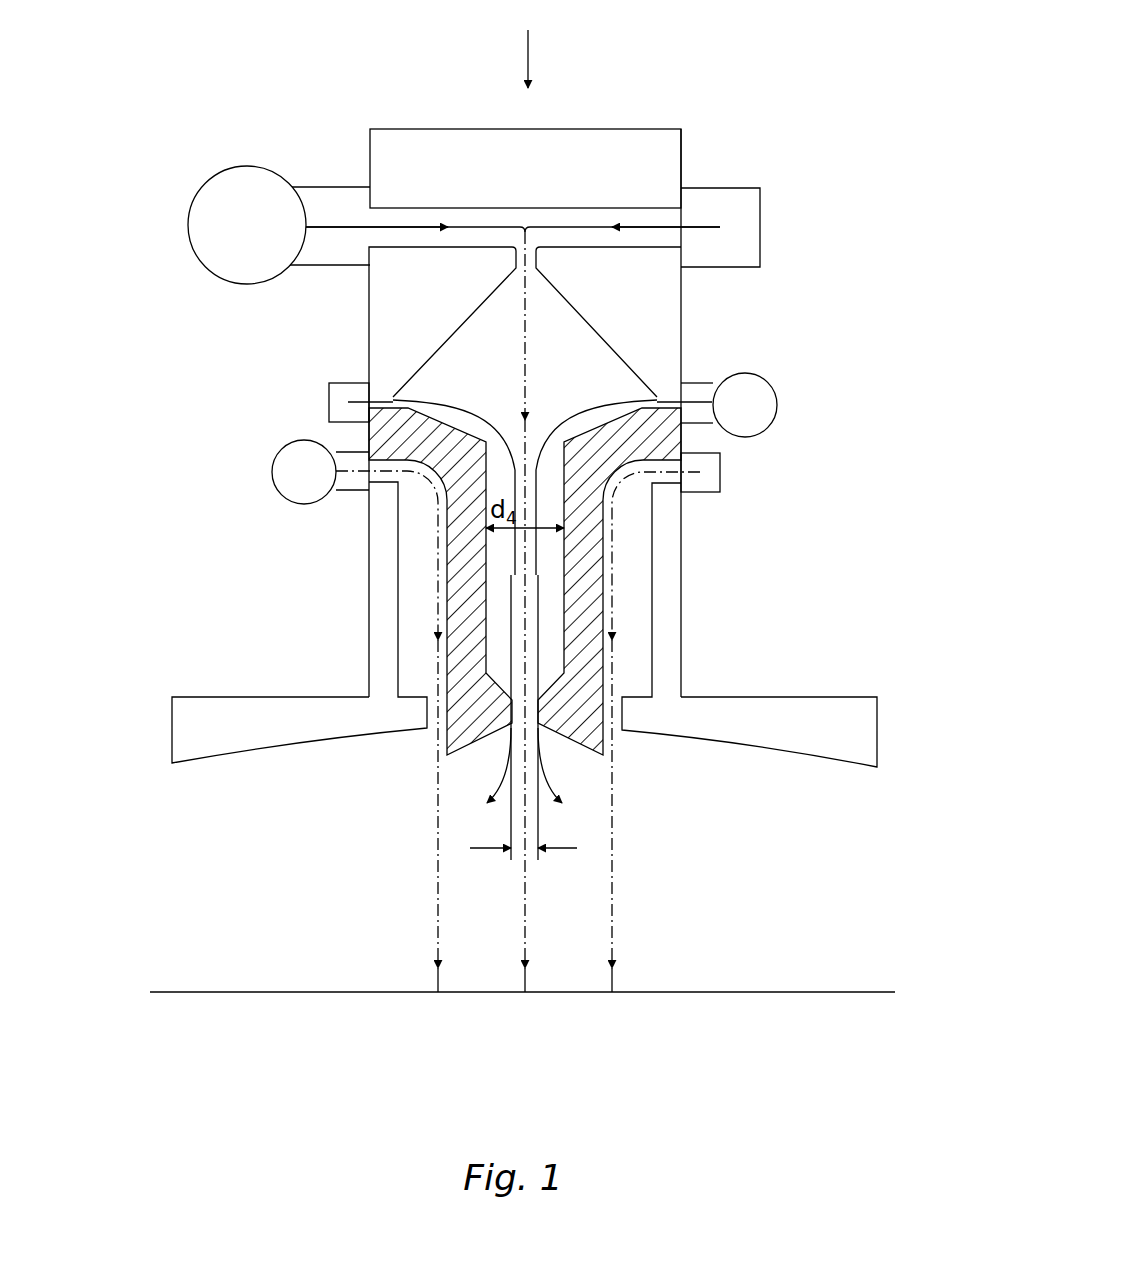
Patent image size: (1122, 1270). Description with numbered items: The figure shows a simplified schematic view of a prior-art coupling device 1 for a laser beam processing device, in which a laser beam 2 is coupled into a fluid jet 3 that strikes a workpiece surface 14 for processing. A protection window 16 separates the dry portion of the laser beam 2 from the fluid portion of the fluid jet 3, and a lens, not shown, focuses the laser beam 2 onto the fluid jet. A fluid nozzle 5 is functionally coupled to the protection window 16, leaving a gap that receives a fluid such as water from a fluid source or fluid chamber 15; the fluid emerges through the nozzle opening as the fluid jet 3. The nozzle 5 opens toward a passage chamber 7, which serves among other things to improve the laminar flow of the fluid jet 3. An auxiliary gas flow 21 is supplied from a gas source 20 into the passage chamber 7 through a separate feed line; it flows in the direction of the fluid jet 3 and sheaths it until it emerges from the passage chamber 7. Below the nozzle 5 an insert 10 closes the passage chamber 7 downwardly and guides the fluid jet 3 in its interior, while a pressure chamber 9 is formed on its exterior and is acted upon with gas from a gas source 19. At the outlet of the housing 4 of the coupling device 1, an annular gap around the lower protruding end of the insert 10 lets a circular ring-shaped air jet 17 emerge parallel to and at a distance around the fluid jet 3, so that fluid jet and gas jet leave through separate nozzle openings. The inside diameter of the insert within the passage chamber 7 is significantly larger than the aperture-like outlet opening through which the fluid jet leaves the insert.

The coupling device 1 is at (808, 157).
The laser beam 2 is at (528, 60).
The fluid jet 3 is at (523, 948).
The housing 4 is at (665, 548).
The fluid nozzle 5 is at (417, 305).
The passage chamber 7 is at (580, 373).
The pressure chamber 9 is at (417, 652).
The insert 10 is at (405, 435).
The workpiece surface 14 is at (845, 992).
The fluid source or fluid chamber 15 is at (253, 228).
The protection window 16 is at (650, 147).
The air jet or gas jet 17 is at (613, 603).
The gas source 19 is at (308, 470).
The gas source 20 is at (747, 408).
The auxiliary gas flow 21 is at (537, 660).